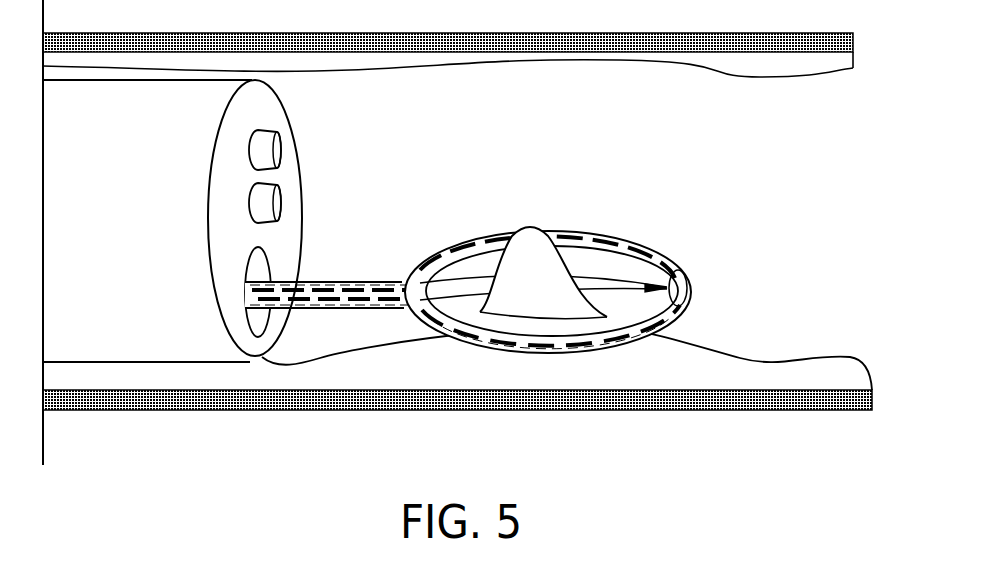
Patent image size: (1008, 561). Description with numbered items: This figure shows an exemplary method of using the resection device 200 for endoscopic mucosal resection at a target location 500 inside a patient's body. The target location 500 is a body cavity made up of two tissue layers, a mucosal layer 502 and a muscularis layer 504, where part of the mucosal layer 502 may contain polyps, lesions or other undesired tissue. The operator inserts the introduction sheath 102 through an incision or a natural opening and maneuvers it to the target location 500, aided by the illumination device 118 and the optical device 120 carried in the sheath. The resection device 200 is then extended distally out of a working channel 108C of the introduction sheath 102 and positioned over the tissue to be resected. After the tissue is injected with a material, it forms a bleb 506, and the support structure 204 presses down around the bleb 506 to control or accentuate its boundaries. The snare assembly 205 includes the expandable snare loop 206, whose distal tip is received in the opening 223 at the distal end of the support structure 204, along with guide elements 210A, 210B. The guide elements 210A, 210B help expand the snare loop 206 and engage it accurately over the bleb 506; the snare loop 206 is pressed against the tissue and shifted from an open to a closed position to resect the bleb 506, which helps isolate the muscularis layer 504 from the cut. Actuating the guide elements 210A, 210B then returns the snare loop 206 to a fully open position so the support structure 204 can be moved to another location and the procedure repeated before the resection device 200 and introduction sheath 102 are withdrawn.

The introduction sheath 102 is at (290, 118).
The illumination device 118 is at (278, 152).
The optical device 120 is at (278, 203).
The working channel 108C is at (258, 322).
The resection device 200 is at (604, 269).
The snare assembly 205 is at (455, 232).
The bleb 506 is at (552, 233).
The guide element 210A is at (650, 282).
The guide element 210B is at (672, 308).
The support structure 204 is at (660, 268).
The opening 223 is at (677, 287).
The snare loop 206 is at (550, 310).
The target location 500 is at (812, 158).
The mucosal layer 502 is at (662, 370).
The muscularis layer 504 is at (747, 410).